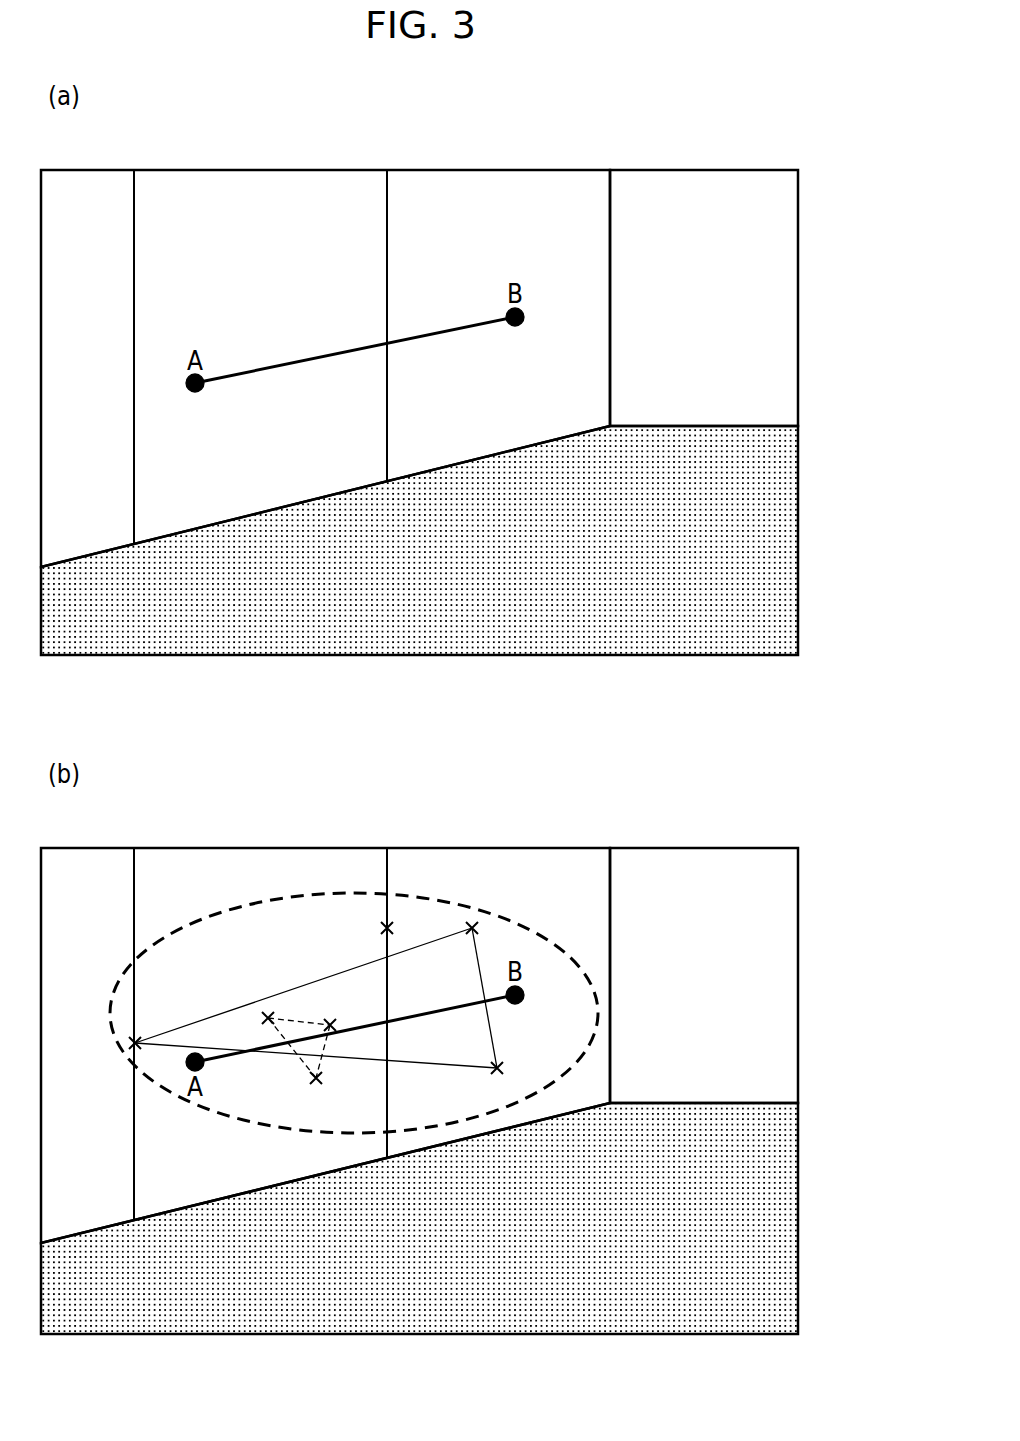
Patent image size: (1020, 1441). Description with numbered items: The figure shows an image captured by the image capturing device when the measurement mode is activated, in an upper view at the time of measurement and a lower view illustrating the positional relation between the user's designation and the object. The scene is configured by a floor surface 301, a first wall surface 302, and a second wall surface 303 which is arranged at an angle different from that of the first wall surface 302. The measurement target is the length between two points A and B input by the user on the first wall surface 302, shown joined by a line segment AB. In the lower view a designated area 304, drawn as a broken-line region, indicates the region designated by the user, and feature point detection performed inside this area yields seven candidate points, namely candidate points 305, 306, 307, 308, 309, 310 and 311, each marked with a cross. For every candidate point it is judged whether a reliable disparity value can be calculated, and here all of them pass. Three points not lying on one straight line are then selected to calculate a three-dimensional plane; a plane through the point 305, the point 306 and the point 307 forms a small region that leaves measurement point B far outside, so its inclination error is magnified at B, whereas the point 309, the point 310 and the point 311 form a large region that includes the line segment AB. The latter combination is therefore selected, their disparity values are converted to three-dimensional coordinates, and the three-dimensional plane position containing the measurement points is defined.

The floor surface 301 is at (667, 638).
The wall surface(1) 302 is at (447, 183).
The wall surface(2) 303 is at (654, 182).
The designated area 304 is at (505, 925).
The candidate point 305 is at (268, 1015).
The candidate point 306 is at (333, 1018).
The candidate point 307 is at (313, 1080).
The candidate point 308 is at (383, 928).
The candidate point 309 is at (468, 933).
The candidate point 310 is at (503, 1063).
The candidate point 311 is at (137, 1040).